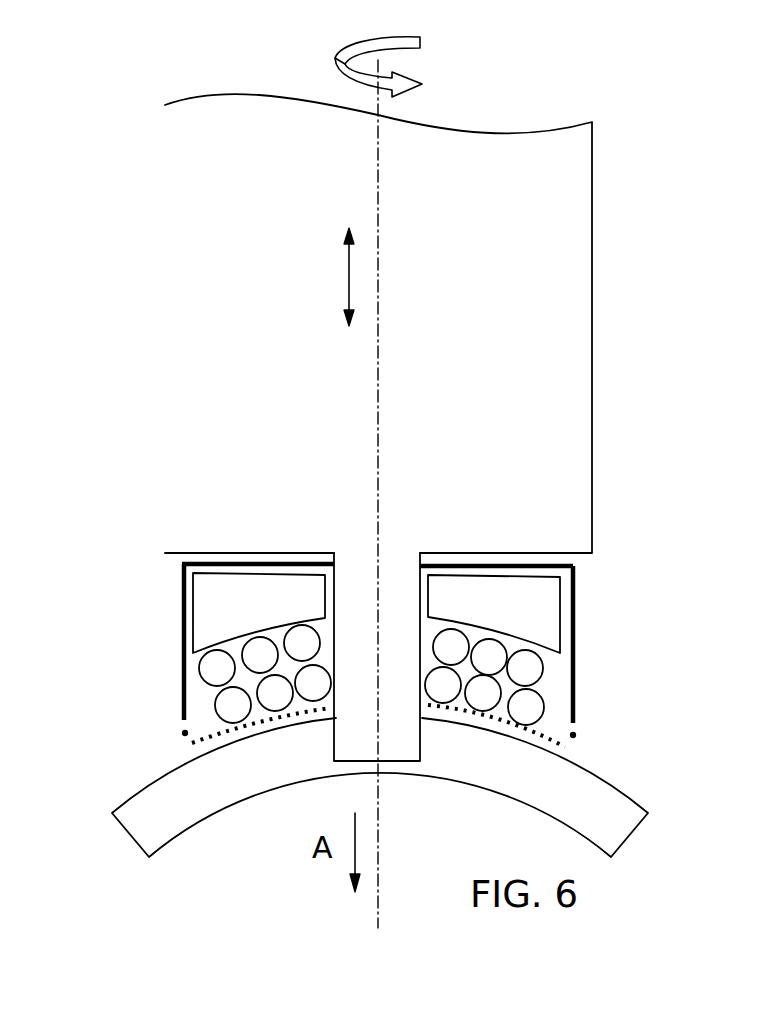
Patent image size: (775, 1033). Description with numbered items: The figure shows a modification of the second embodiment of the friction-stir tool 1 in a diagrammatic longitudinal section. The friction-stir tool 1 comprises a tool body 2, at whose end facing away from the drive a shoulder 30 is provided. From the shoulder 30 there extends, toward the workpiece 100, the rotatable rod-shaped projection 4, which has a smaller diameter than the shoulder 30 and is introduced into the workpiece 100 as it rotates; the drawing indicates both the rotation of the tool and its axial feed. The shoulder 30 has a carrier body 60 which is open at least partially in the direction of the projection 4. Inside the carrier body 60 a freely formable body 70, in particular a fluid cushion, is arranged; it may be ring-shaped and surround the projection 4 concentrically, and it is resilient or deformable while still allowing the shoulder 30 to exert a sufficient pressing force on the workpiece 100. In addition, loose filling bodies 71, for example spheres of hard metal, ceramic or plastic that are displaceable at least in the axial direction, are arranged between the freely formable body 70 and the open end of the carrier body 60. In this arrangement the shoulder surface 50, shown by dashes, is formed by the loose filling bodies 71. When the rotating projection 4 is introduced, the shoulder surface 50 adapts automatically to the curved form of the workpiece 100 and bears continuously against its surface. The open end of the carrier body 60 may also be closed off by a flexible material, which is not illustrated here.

The friction-stir tool 1 is at (415, 430).
The tool body 2 is at (568, 316).
The rod-shaped projection 4 is at (405, 745).
The shoulder 30 is at (192, 696).
The shoulder surface 50 is at (576, 747).
The carrier body 60 is at (576, 577).
The freely formable body 70 is at (543, 618).
The loose filling bodies 71 is at (524, 676).
The workpiece 100 is at (623, 822).